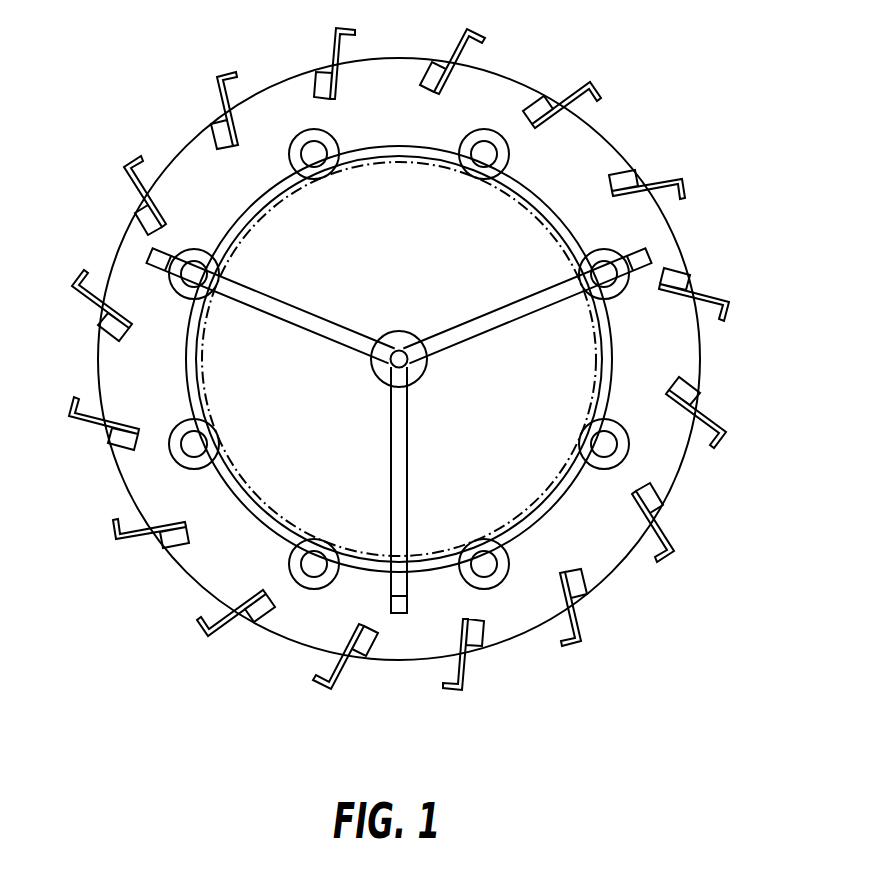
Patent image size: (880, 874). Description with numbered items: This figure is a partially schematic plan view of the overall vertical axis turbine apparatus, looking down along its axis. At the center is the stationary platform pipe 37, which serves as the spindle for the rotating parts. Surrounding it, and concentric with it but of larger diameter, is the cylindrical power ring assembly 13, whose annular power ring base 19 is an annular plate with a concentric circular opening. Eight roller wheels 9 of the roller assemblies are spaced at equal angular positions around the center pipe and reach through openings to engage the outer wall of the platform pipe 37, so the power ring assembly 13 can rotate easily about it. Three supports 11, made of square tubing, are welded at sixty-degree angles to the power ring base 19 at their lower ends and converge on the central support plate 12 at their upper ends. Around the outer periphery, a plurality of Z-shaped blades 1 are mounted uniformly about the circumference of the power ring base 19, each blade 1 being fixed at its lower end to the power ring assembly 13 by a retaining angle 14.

The Z shaped blade 1 is at (668, 534).
The roller wheel 9 is at (289, 158).
The support 11 is at (651, 250).
The support plate 12 is at (371, 372).
The power ring assembly 13 is at (615, 355).
The retaining angle 14 is at (143, 229).
The power ring base 19 is at (607, 128).
The platform pipe 37 is at (394, 164).